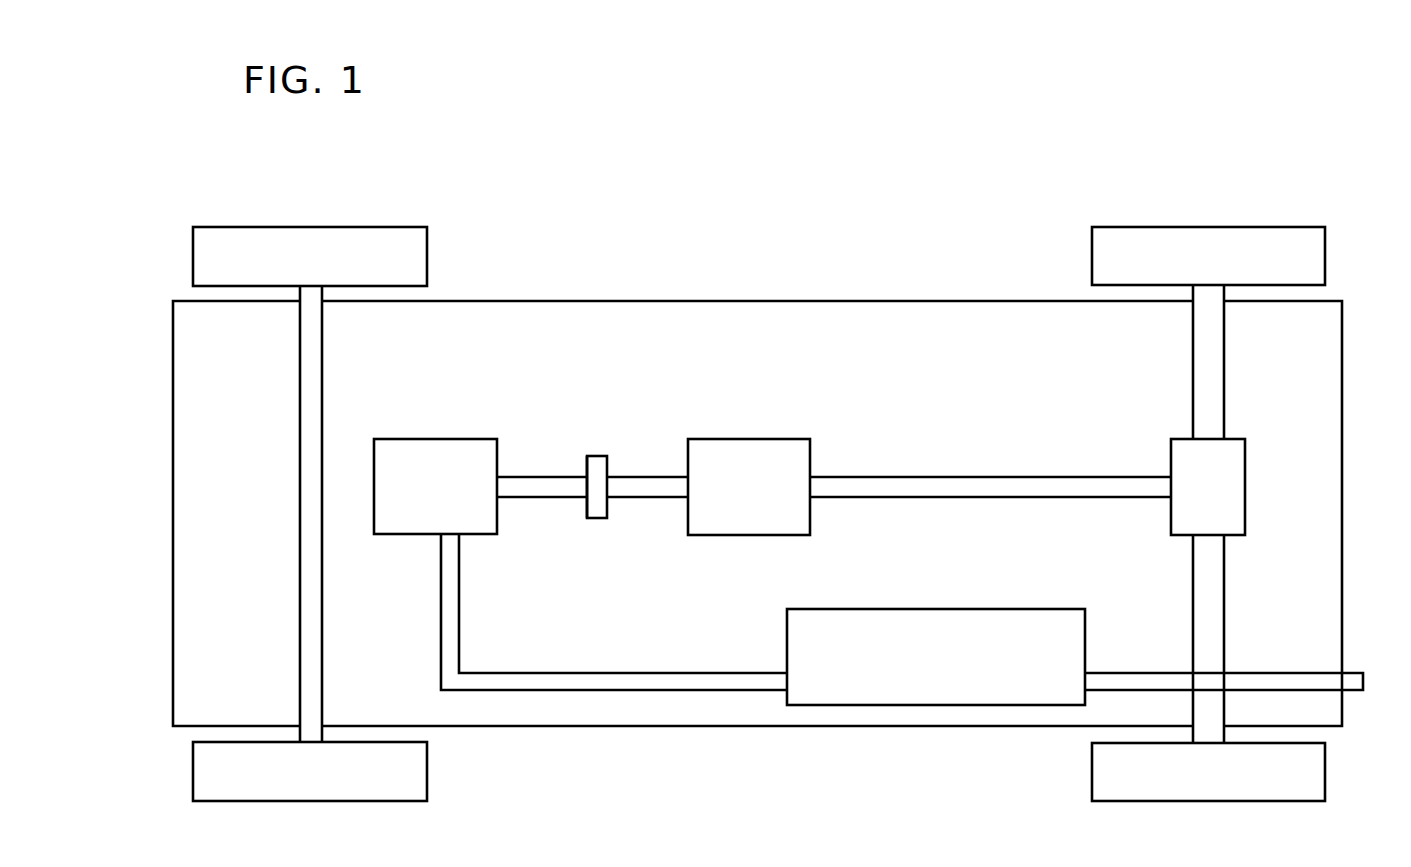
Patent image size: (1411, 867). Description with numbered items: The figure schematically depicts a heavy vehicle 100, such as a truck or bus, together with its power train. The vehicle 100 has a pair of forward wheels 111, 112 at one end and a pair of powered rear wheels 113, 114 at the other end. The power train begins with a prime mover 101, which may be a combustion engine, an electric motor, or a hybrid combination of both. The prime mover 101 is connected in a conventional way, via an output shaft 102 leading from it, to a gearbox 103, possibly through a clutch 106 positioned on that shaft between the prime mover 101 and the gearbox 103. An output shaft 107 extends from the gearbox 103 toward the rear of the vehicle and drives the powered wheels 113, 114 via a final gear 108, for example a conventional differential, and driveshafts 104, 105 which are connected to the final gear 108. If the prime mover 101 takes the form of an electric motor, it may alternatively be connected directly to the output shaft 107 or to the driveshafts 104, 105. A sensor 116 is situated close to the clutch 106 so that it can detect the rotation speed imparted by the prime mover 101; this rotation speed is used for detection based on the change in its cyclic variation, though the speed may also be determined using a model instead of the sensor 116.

The heavy vehicle 100 is at (652, 134).
The prime mover 101 is at (407, 525).
The output shaft 102 is at (524, 483).
The gearbox 103 is at (752, 450).
The driveshaft 104 is at (1212, 360).
The driveshaft 105 is at (1218, 646).
The clutch 106 is at (594, 505).
The output shaft 107 is at (1087, 490).
The final gear 108 is at (1240, 484).
The forward wheel 111 is at (416, 259).
The forward wheel 112 is at (420, 776).
The powered rear wheel 113 is at (1318, 249).
The powered rear wheel 114 is at (1320, 776).
The sensor 116 is at (581, 483).